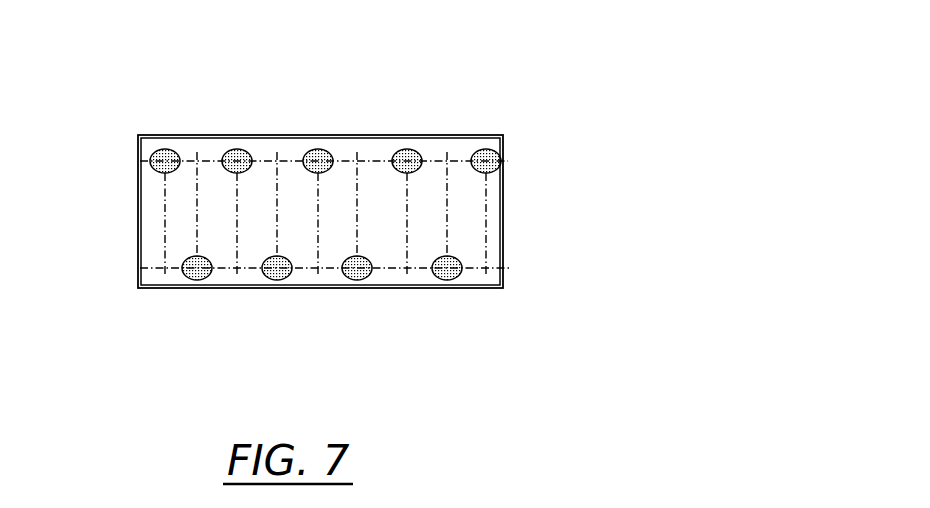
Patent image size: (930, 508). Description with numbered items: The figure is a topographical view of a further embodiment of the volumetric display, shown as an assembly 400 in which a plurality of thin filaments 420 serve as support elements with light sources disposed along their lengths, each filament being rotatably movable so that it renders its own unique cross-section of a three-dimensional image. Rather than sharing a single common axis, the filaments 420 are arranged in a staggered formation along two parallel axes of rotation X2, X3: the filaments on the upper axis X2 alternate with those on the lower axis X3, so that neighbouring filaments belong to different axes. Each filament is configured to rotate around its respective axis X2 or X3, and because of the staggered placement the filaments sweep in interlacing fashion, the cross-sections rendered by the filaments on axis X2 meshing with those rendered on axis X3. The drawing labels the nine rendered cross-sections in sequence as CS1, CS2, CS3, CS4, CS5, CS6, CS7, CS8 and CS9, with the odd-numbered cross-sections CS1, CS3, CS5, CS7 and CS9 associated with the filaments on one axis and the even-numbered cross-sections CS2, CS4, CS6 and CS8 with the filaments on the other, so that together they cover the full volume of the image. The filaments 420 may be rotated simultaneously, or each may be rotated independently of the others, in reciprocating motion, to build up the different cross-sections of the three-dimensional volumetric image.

The battery module housing 400 is at (503, 188).
The filament 420 is at (166, 150).
The parallel axis X2 is at (136, 162).
The parallel axis X3 is at (502, 270).
The cell stack column 1 CS1 is at (125, 202).
The cell stack column 2 CS2 is at (197, 178).
The cell stack column 3 CS3 is at (237, 253).
The cell stack column 4 CS4 is at (277, 178).
The cell stack column 5 CS5 is at (318, 253).
The cell stack column 6 CS6 is at (357, 178).
The cell stack column 7 CS7 is at (407, 253).
The cell stack column 8 CS8 is at (447, 178).
The cell stack column 9 CS9 is at (486, 253).